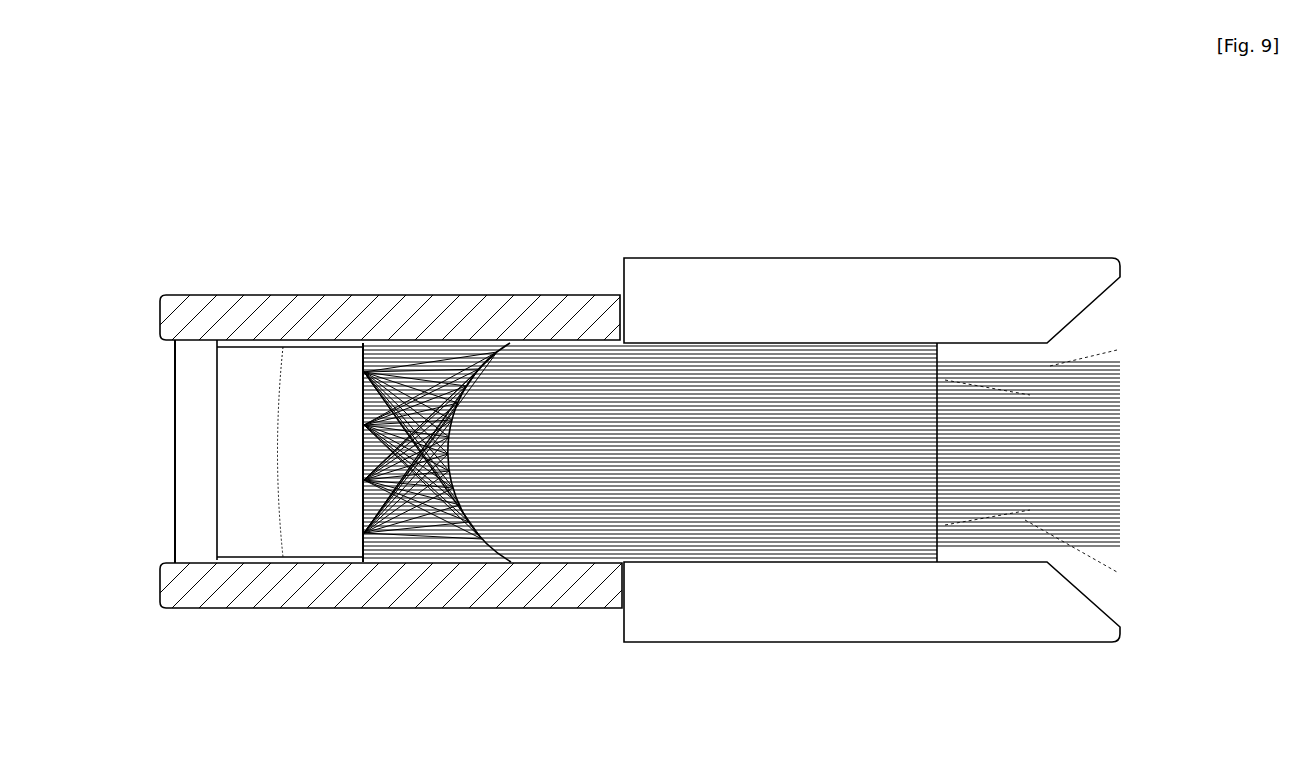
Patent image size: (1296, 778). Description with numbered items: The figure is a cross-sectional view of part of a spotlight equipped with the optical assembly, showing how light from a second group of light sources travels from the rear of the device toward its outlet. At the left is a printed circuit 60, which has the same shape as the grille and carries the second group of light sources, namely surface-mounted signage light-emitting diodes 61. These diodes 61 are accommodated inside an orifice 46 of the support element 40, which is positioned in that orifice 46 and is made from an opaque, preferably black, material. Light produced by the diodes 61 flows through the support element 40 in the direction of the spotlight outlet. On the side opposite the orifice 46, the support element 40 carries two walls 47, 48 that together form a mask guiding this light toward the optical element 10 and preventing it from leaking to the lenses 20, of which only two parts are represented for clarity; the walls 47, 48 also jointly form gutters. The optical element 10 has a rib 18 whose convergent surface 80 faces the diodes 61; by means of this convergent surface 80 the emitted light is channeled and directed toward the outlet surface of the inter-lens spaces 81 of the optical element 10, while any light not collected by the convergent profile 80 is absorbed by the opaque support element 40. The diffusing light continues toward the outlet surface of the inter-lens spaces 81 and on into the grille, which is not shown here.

The optical element 10 is at (872, 478).
The rib 18 is at (627, 410).
The lenses 20 is at (983, 298).
The support element 40 is at (369, 470).
The orifice 46 is at (247, 560).
The wall 47 is at (260, 320).
The wall 48 is at (520, 588).
The printed circuit 60 is at (193, 405).
The light-emitting diodes 61 is at (243, 457).
The convergent surface 80 is at (450, 433).
The inter-lens spaces 81 is at (967, 368).